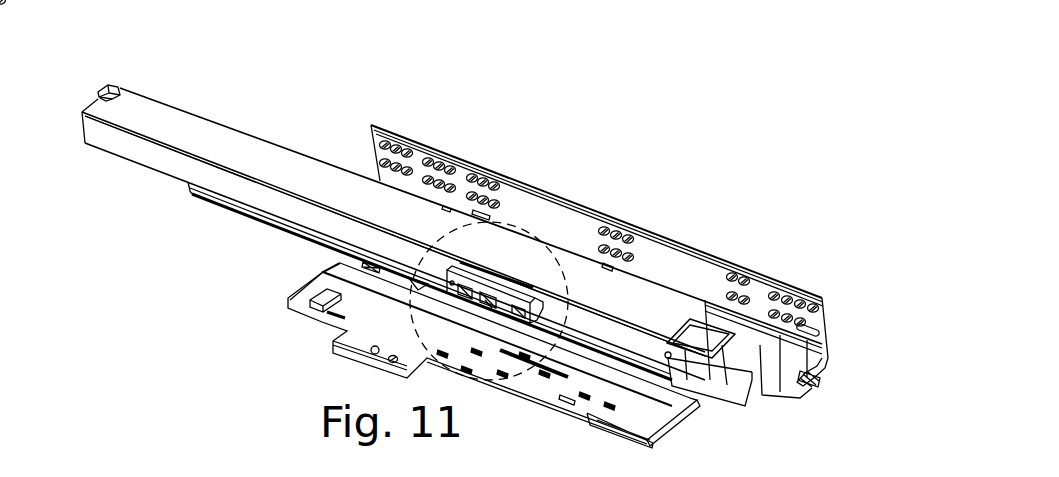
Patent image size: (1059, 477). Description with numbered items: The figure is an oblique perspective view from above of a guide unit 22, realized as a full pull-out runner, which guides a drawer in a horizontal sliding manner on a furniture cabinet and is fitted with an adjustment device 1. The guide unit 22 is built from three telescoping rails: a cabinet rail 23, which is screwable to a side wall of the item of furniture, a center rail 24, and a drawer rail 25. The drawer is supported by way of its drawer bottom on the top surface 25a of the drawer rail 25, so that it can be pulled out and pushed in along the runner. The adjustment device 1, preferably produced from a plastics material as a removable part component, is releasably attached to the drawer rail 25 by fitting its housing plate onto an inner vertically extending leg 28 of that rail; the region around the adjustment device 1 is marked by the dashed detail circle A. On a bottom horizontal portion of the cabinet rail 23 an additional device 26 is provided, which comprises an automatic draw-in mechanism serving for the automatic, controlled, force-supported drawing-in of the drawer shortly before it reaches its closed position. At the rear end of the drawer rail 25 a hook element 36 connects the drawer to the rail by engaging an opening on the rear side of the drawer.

The adjustment device 1 is at (537, 288).
The guide unit 22 is at (521, 170).
The cabinet rail 23 is at (815, 383).
The center rail 24 is at (233, 208).
The drawer rail 25 is at (110, 150).
The top surface 25a is at (150, 110).
The additional device 26 is at (322, 321).
The inner vertically extending leg 28 is at (152, 153).
The hook element 36 is at (112, 82).
The detail region A is at (517, 375).